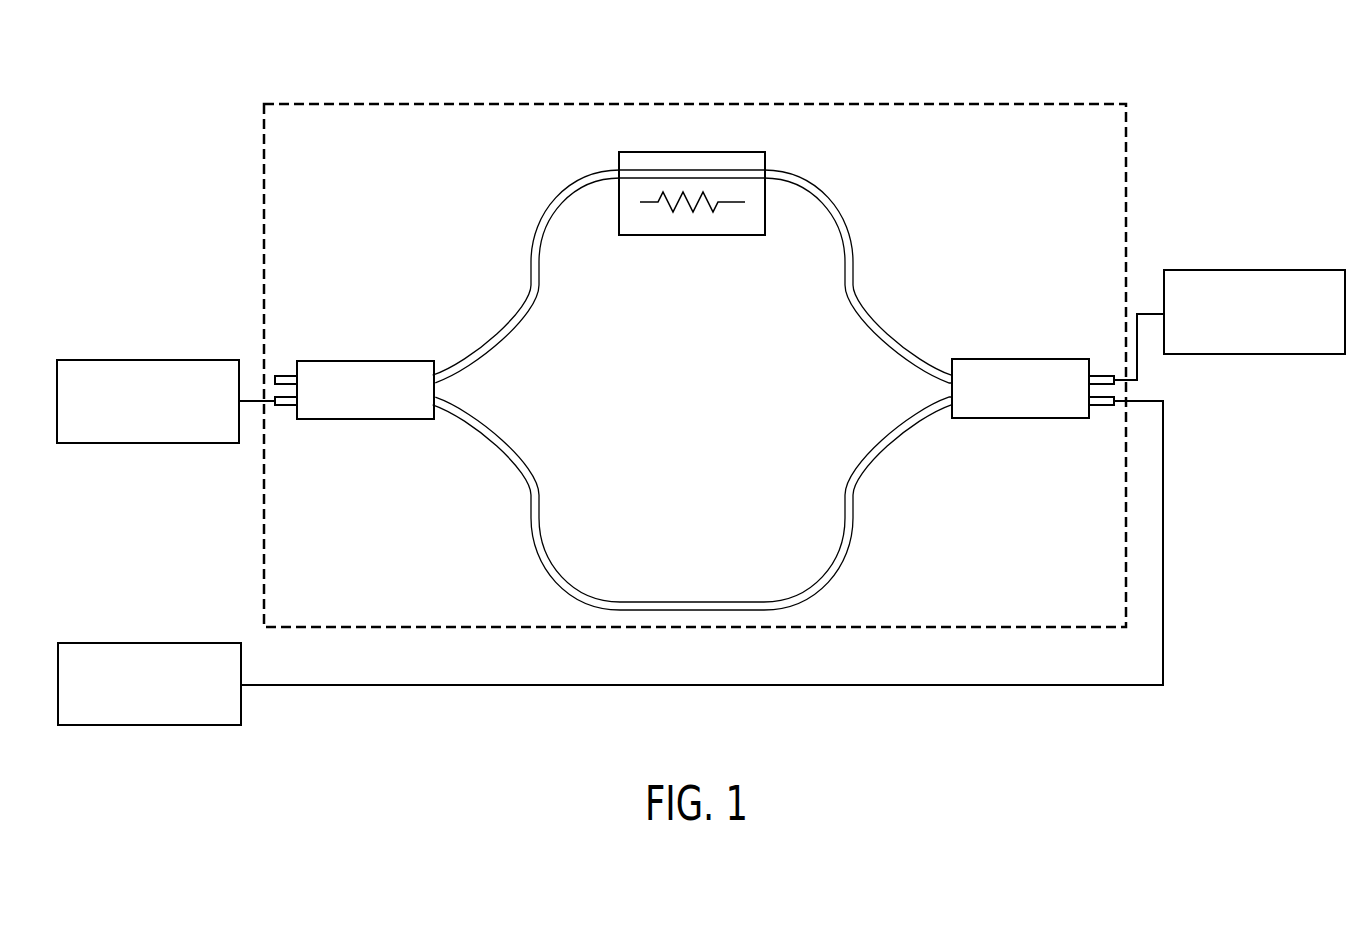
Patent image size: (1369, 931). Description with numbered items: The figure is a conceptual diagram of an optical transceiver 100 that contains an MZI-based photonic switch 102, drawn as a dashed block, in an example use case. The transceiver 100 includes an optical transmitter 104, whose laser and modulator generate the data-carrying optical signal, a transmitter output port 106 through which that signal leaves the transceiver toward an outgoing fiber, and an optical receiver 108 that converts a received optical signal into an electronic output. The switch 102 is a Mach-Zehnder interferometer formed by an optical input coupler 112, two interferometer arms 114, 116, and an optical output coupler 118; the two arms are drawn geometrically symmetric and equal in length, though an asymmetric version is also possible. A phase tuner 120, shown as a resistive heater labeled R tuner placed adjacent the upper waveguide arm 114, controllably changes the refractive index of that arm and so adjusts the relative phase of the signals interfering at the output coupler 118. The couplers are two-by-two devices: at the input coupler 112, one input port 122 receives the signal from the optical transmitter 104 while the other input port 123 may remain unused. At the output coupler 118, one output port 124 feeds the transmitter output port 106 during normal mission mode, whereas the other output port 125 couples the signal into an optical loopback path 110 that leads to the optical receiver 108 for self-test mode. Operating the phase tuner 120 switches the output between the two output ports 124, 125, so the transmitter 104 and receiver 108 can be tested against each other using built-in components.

The optical transceiver 100 is at (1249, 89).
The MZI-based photonic switch 102 is at (1086, 104).
The optical transmitter 104 is at (115, 360).
The transmitter output port 106 is at (1293, 270).
The optical receiver 108 is at (147, 643).
The optical loopback path 110 is at (1165, 596).
The optical input coupler 112 is at (380, 361).
The first interferometer arm 114 is at (810, 190).
The second interferometer arm 116 is at (800, 588).
The optical output coupler 118 is at (1002, 359).
The phase tuner 120 is at (737, 152).
The input port 122 is at (283, 405).
The input port 123 is at (283, 376).
The output port 124 is at (1105, 376).
The output port 125 is at (1102, 405).